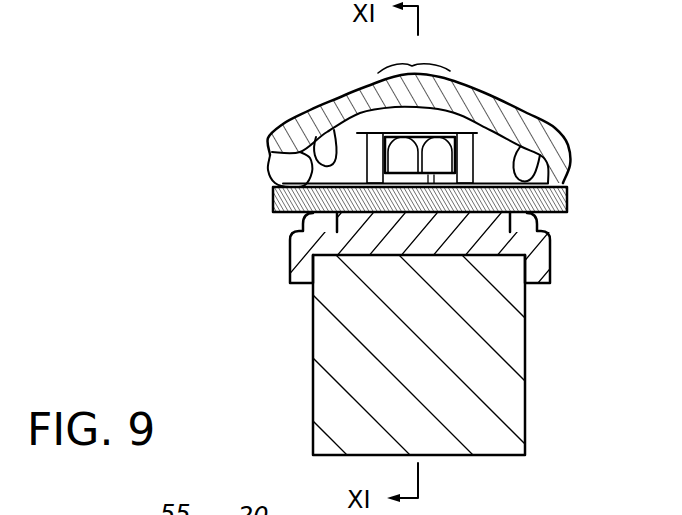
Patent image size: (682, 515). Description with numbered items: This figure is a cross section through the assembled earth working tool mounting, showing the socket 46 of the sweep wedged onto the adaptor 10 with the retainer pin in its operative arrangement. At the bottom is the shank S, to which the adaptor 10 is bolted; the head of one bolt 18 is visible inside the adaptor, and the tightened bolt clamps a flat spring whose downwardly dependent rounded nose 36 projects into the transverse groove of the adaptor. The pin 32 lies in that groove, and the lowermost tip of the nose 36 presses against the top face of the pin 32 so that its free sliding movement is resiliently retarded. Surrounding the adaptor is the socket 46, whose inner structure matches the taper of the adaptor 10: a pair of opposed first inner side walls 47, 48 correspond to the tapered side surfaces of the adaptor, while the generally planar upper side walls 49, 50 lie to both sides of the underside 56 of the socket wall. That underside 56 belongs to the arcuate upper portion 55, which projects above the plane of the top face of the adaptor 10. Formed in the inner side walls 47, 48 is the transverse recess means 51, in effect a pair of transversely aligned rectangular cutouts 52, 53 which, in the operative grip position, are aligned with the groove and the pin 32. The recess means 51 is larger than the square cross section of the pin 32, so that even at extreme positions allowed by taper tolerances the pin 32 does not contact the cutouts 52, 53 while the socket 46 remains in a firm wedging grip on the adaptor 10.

The adaptor 10 is at (566, 136).
The bolt 18 is at (440, 131).
The pin 32 is at (272, 193).
The nose 36 is at (322, 182).
The socket 46 is at (284, 114).
The first inner side wall 47 is at (305, 138).
The first inner side wall 48 is at (530, 170).
The upper side wall 49 is at (343, 115).
The upper side wall 50 is at (497, 170).
The transverse recess means 51 is at (585, 164).
The rectangular cutout 52 is at (297, 219).
The rectangular cutout 53 is at (532, 214).
The arcuate upper portion 55 is at (414, 54).
The underside of the wall 56 is at (362, 102).
The shank S is at (350, 348).